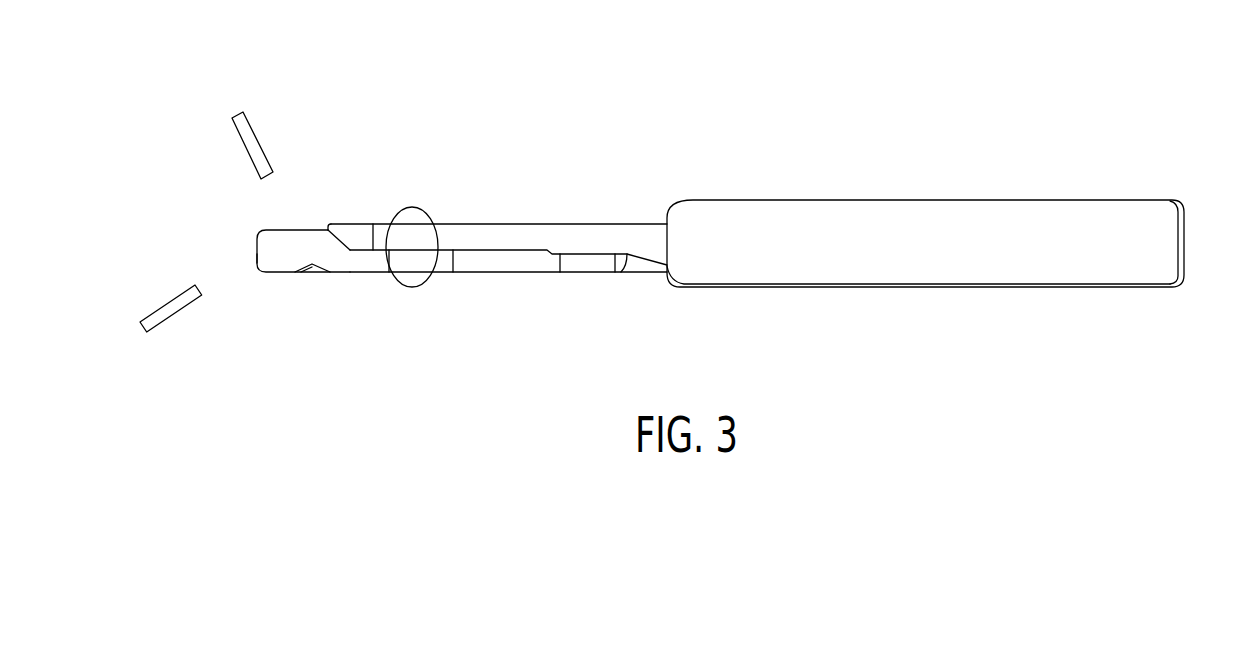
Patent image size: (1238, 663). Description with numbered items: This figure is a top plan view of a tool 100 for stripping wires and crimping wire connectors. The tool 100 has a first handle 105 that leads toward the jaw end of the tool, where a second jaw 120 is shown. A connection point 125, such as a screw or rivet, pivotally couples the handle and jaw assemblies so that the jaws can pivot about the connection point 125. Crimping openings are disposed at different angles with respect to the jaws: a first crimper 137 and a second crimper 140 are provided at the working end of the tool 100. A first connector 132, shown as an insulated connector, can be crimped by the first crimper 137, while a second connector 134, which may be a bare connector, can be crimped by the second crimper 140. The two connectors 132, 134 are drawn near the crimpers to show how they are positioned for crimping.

The tool 100 is at (1080, 109).
The first handle 105 is at (1167, 268).
The second jaw 120 is at (345, 262).
The connection point 125 is at (418, 211).
The first connector 132 is at (173, 327).
The second connector 134 is at (242, 113).
The first crimper 137 is at (256, 261).
The second crimper 140 is at (286, 228).